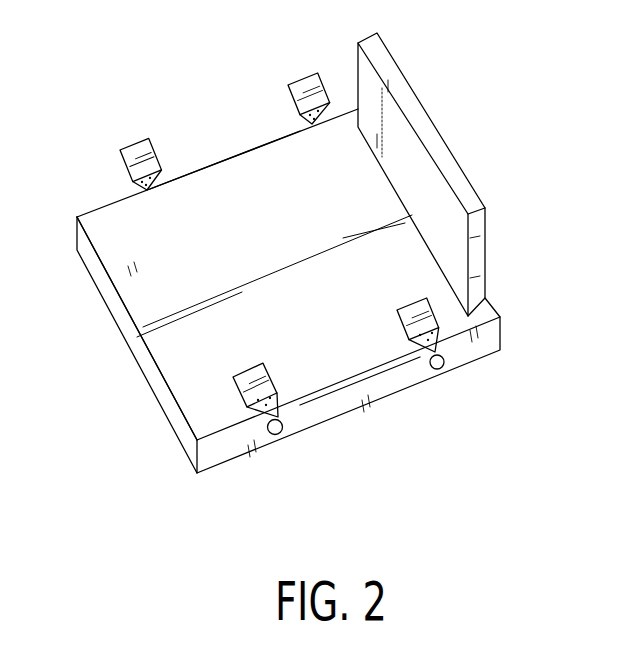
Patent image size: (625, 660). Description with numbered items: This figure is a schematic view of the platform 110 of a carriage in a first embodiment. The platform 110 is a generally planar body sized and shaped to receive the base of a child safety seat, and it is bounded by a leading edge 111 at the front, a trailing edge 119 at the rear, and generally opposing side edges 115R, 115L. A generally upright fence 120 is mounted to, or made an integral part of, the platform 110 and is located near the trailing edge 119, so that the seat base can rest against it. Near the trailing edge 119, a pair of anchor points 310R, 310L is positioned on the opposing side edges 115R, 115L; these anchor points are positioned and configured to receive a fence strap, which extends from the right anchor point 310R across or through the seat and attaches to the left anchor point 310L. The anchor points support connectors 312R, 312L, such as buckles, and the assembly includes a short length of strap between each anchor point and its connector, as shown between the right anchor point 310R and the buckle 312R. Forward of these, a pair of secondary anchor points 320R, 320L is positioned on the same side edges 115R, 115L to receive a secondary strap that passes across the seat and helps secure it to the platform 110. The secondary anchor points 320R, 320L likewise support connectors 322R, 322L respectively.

The platform 110 is at (200, 258).
The leading edge 111 is at (160, 383).
The left side edge 115L is at (208, 131).
The right side edge 115R is at (377, 390).
The trailing edge 119 is at (503, 296).
The fence 120 is at (488, 252).
The left anchor point 310L is at (292, 119).
The right anchor point 310R is at (446, 363).
The left connector 312L is at (301, 81).
The right connector 312R is at (412, 300).
The left secondary anchor point 320L is at (118, 184).
The right secondary anchor point 320R is at (283, 428).
The left secondary connector 322L is at (135, 142).
The right secondary connector 322R is at (250, 362).